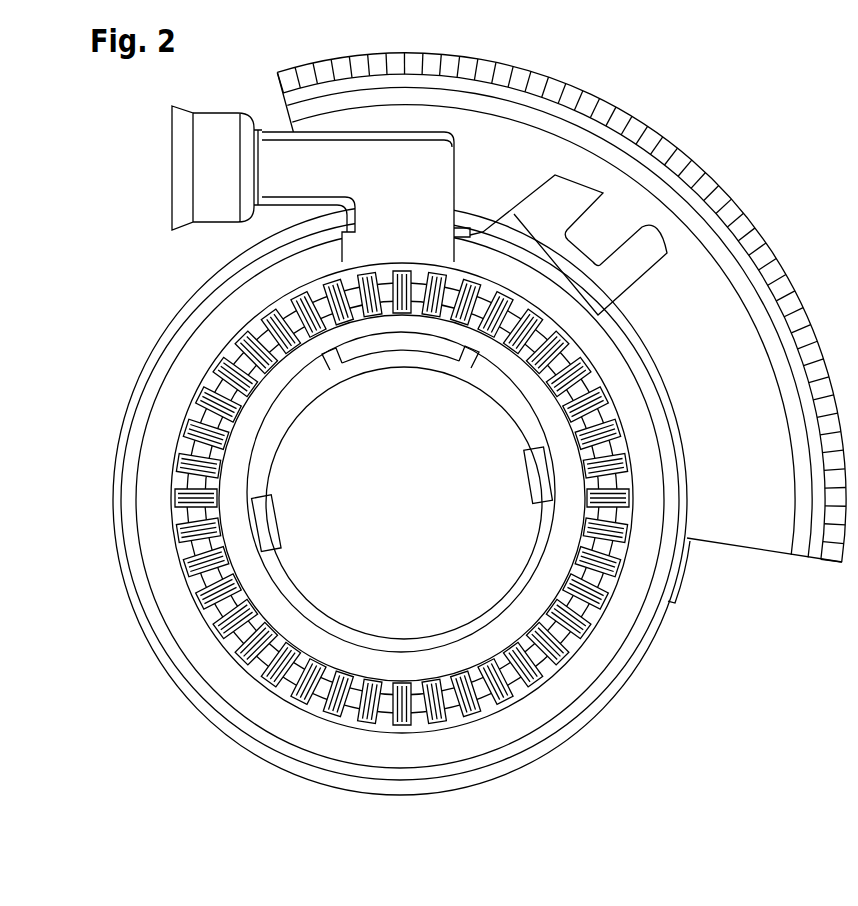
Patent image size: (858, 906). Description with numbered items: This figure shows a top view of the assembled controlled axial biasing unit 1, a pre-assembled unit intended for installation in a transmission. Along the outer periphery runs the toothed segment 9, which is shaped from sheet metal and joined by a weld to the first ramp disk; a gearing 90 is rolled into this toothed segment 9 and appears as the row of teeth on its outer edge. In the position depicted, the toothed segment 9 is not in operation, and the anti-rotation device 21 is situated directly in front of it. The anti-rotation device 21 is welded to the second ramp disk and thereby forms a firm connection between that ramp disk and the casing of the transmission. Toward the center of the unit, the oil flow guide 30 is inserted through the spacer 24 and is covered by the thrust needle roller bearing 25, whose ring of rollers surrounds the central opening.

The controlled axial biasing unit 1 is at (677, 81).
The toothed segment 9 is at (757, 512).
The anti-rotation device 21 is at (568, 197).
The spacer 24 is at (183, 380).
The thrust needle roller bearing 25 is at (216, 352).
The oil flow guide 30 is at (216, 136).
The gearing 90 is at (607, 116).